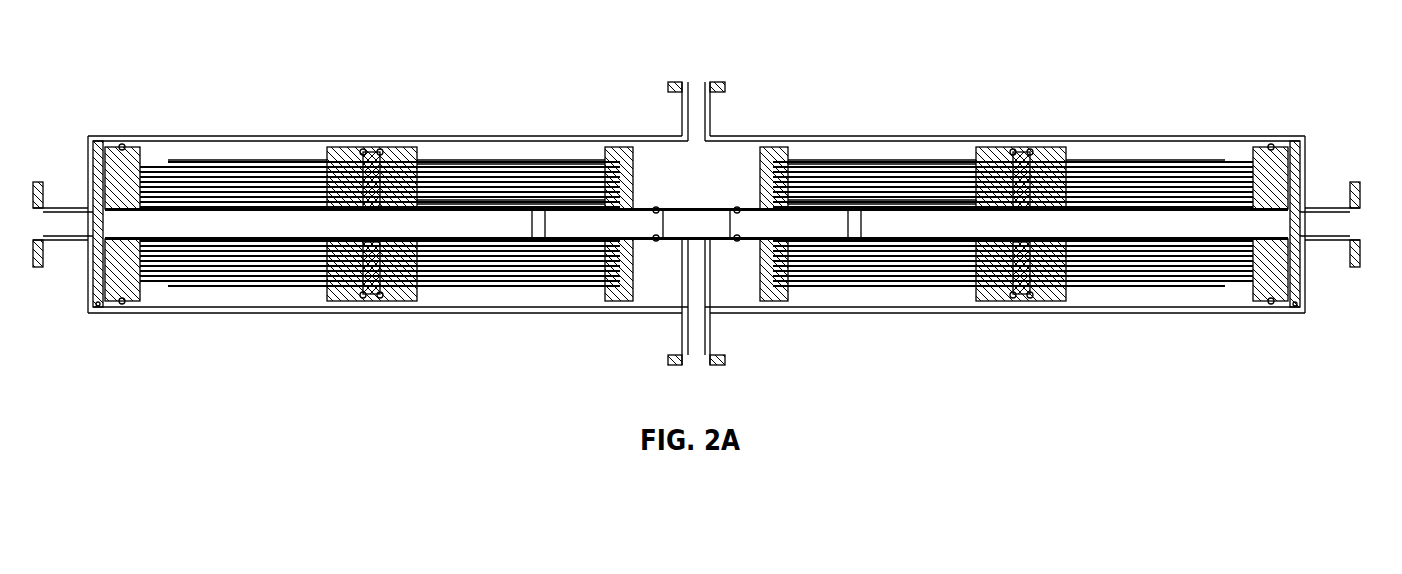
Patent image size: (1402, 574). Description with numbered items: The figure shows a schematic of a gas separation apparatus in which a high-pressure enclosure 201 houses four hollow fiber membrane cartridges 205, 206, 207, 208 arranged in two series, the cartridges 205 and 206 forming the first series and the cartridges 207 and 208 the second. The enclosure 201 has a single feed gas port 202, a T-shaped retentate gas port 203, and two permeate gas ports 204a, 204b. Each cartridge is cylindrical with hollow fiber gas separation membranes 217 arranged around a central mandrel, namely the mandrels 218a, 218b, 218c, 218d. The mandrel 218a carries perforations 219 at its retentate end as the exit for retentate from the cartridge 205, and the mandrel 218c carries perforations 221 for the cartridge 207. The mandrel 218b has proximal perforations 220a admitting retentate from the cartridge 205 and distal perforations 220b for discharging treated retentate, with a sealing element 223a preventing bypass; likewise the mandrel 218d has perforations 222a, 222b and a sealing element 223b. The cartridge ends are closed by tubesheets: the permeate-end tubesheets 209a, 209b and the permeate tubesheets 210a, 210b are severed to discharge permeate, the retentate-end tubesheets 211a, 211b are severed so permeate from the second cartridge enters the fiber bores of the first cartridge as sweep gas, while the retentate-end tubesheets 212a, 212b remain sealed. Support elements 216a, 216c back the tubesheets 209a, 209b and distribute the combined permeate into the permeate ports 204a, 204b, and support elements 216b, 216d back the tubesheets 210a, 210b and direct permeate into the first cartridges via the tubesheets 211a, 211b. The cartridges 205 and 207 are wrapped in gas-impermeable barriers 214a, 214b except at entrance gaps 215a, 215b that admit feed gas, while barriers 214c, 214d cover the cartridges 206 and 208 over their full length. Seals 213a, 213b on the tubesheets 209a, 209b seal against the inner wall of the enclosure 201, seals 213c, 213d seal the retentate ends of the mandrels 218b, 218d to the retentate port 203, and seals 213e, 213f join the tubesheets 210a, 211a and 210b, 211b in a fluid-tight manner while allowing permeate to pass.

The high-pressure enclosure 201 is at (218, 137).
The feed gas port 202 is at (721, 83).
The retentate gas port 203 is at (682, 330).
The permeate gas port 204a is at (70, 206).
The permeate gas port 204b is at (1323, 206).
The hollow fiber membrane cartridge 205 is at (173, 250).
The hollow fiber membrane cartridge 206 is at (500, 267).
The hollow fiber membrane cartridge 207 is at (1150, 262).
The hollow fiber membrane cartridge 208 is at (870, 255).
The permeate-end tubesheet 209a is at (140, 300).
The permeate-end tubesheet 209b is at (1263, 300).
The permeate tubesheet 210a is at (388, 296).
The permeate tubesheet 210b is at (1005, 296).
The retentate-end tubesheet 211a is at (342, 308).
The retentate-end tubesheet 211b is at (1045, 308).
The retentate-end tubesheet 212a is at (613, 300).
The retentate-end tubesheet 212b is at (763, 300).
The seal 213a is at (123, 146).
The seal 213b is at (1271, 146).
The seal 213c is at (656, 206).
The seal 213d is at (736, 206).
The seals 213e is at (380, 150).
The seals 213f is at (1030, 150).
The gas-impermeable barrier 214a is at (262, 162).
The gas-impermeable barrier 214b is at (1150, 162).
The gas-impermeable barrier 214c is at (448, 160).
The gas-impermeable barrier 214d is at (915, 162).
The entrance gap 215a is at (165, 160).
The entrance gap 215b is at (1230, 160).
The support element 216a is at (98, 306).
The support element 216b is at (361, 296).
The support element 216c is at (1300, 302).
The support element 216d is at (1030, 297).
The hollow fiber gas separation membranes 217 is at (222, 270).
The central mandrel 218a is at (253, 228).
The central mandrel 218b is at (438, 226).
The central mandrel 218c is at (1100, 226).
The central mandrel 218d is at (820, 226).
The perforations 219 is at (290, 205).
The perforations 220a is at (447, 186).
The perforations 220b is at (580, 202).
The perforations 221 is at (1102, 204).
The perforations 222a is at (946, 204).
The perforations 222b is at (800, 204).
The sealing element 223a is at (540, 206).
The sealing element 223b is at (853, 204).